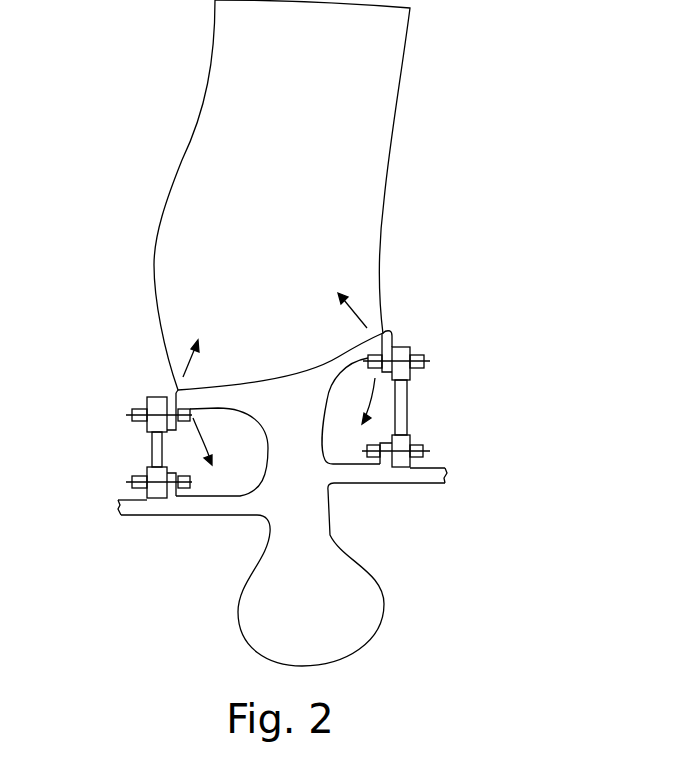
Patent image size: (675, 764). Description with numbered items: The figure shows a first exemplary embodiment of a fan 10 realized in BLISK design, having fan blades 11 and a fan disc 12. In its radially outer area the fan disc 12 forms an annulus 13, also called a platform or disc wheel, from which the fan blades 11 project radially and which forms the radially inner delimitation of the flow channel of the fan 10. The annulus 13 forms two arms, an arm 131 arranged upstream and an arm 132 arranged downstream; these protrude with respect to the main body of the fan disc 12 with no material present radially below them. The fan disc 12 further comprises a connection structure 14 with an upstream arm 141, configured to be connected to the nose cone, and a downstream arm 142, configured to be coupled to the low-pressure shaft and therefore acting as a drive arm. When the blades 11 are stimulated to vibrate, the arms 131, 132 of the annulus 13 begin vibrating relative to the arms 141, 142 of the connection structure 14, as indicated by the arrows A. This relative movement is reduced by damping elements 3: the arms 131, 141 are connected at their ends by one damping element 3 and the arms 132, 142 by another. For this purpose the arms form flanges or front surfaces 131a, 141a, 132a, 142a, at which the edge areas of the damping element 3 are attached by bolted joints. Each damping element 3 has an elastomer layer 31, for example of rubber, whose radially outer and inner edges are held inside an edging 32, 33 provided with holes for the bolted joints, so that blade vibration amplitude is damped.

The fan 10 is at (180, 89).
The fan blades 11 is at (198, 168).
The fan disc 12 is at (273, 593).
The annulus 13 is at (287, 393).
The connection structure 14 is at (237, 517).
The arm arranged upstream 131 is at (173, 413).
The flange or front surface 131a is at (175, 412).
The arm arranged downstream 132 is at (387, 338).
The flange or front surface 132a is at (393, 347).
The arm arranged upstream 141 is at (212, 505).
The flange or front surface 141a is at (173, 484).
The arm arranged downstream 142 is at (357, 483).
The flange or front surface 142a is at (386, 452).
The damping element 3 is at (129, 447).
The elastomer layer 31 is at (407, 422).
The edging 32 is at (410, 348).
The edging 33 is at (410, 464).